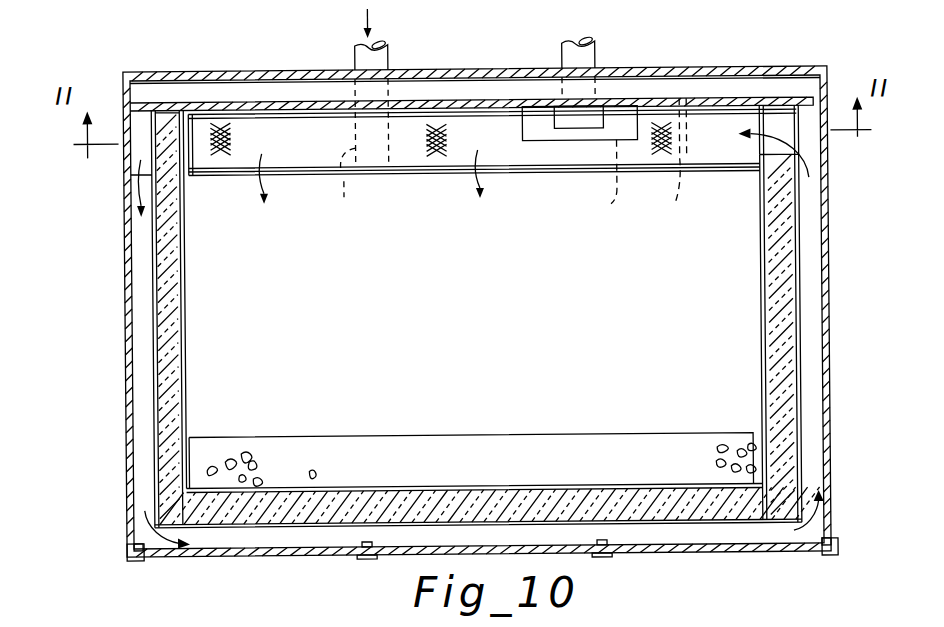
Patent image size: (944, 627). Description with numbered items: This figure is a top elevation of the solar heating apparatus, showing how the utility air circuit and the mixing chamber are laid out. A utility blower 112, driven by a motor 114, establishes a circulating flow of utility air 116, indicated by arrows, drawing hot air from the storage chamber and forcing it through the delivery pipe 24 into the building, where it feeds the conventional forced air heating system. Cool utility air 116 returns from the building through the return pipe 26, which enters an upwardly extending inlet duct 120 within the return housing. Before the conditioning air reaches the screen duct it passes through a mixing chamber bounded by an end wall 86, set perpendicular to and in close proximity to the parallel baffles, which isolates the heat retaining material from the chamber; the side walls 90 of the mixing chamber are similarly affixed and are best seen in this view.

The delivery pipe 24 is at (597, 60).
The return pipe 26 is at (383, 60).
The end wall 86 is at (664, 156).
The side walls 90 is at (729, 108).
The utility blower 112 is at (577, 122).
The motor 114 is at (596, 180).
The utility air 116 is at (370, 17).
The inlet duct 120 is at (328, 180).